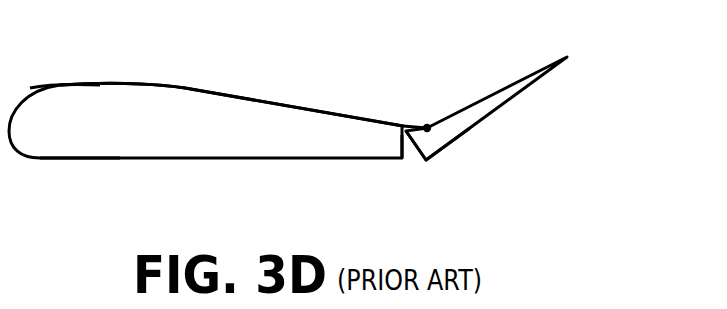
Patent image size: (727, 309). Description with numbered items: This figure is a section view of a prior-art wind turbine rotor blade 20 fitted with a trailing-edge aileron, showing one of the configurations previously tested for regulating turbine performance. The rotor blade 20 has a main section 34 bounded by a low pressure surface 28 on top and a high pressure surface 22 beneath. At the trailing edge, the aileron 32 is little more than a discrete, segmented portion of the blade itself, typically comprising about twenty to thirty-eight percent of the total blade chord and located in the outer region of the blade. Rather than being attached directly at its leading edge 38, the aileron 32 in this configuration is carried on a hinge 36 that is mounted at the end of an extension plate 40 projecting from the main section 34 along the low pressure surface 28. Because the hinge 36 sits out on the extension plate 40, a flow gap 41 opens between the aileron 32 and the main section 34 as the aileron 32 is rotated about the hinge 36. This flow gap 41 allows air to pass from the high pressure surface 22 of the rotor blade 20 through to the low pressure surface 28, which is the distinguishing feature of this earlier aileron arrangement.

The rotor blade 20 is at (274, 172).
The high pressure surface 22 is at (90, 160).
The low pressure surface 28 is at (88, 85).
The aileron 32 is at (468, 116).
The main section 34 is at (197, 135).
The hinge 36 is at (427, 125).
The leading edge 38 is at (418, 163).
The extension plate 40 is at (412, 127).
The flow gap 41 is at (409, 164).